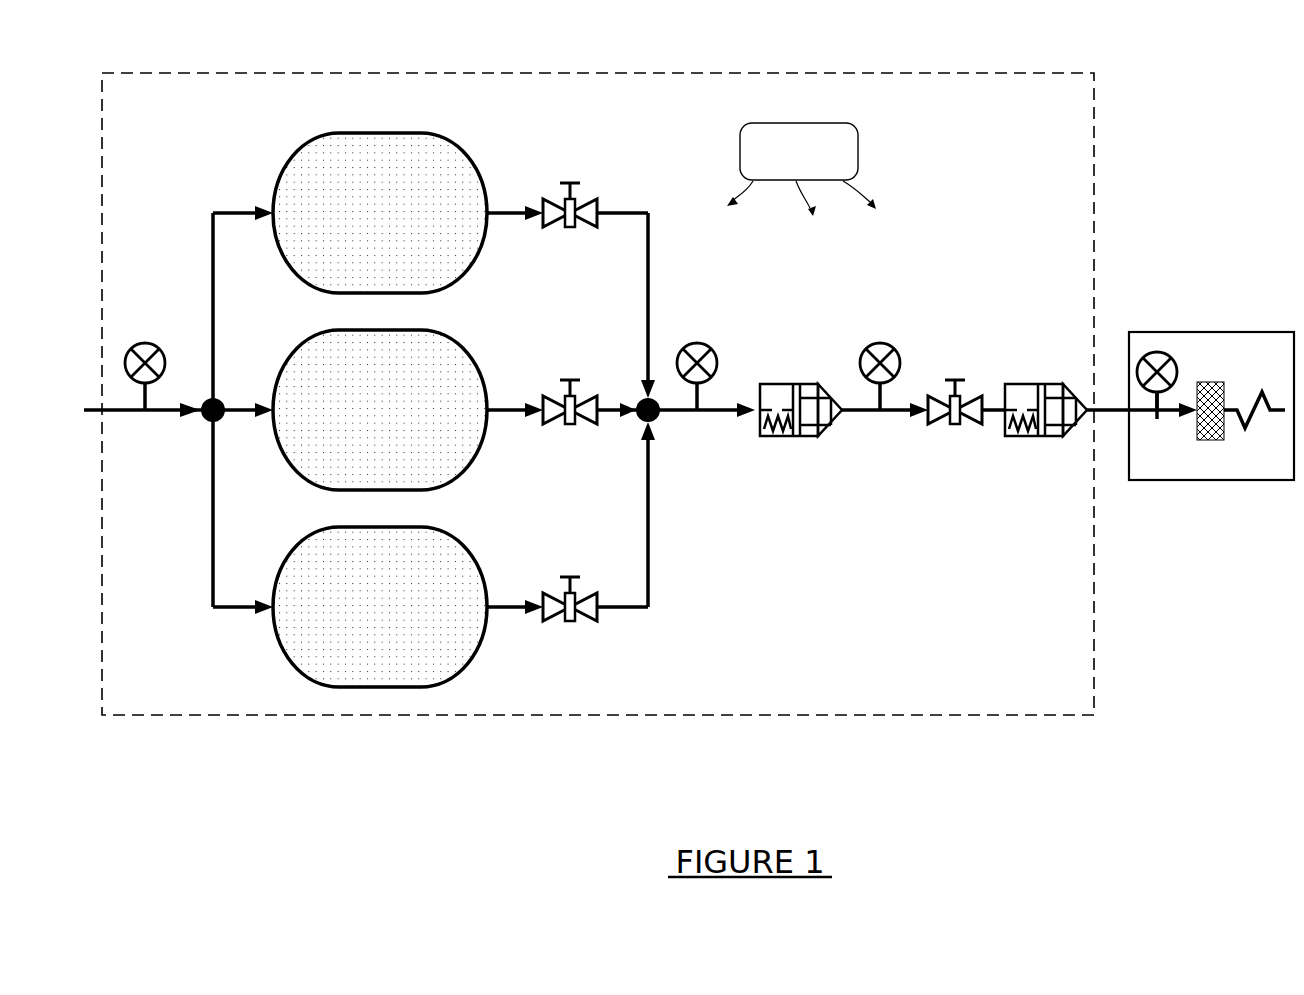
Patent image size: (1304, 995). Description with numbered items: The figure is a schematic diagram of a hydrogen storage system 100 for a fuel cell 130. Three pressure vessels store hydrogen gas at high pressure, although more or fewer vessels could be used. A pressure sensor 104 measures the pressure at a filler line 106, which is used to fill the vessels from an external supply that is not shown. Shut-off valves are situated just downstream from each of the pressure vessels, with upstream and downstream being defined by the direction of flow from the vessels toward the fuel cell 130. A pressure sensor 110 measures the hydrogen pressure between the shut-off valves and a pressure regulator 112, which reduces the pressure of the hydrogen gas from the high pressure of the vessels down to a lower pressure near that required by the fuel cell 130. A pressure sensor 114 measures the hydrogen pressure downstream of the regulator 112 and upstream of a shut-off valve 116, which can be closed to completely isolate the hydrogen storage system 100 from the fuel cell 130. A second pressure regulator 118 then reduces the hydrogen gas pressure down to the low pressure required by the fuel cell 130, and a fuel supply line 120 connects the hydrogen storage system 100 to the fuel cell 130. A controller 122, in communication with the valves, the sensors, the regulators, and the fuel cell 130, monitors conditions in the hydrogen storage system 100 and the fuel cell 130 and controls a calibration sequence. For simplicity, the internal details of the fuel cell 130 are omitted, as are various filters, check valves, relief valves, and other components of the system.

The hydrogen storage system 100 is at (806, 70).
The pressure sensor 104 is at (148, 343).
The filler line 106 is at (128, 414).
The pressure sensor 110 is at (697, 343).
The pressure regulator 112 is at (785, 385).
The pressure sensor 114 is at (880, 343).
The shut-off valve 116 is at (968, 397).
The second pressure regulator 118 is at (1027, 385).
The fuel supply line 120 is at (1105, 405).
The controller 122 is at (858, 143).
The fuel cell 130 is at (1190, 482).